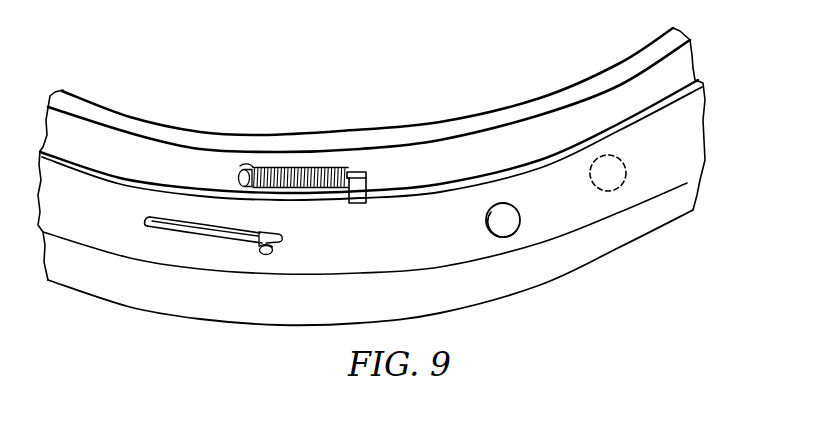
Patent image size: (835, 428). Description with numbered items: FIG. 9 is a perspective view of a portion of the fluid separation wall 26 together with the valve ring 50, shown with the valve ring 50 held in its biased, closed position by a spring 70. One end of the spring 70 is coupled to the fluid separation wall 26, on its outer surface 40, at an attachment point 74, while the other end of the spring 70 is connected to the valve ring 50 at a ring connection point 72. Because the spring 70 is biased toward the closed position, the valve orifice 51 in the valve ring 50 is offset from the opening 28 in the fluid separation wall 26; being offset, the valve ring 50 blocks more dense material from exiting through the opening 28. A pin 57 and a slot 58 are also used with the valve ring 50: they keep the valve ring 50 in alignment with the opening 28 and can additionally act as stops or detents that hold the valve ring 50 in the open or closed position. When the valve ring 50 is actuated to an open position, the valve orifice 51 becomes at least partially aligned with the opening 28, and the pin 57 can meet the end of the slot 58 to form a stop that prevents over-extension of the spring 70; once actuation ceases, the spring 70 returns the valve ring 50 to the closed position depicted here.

The fluid separation wall 26 is at (137, 84).
The outer surface 40 is at (433, 132).
The valve ring 50 is at (442, 240).
The spring 70 is at (297, 168).
The attachment point 74 is at (238, 177).
The ring connection point 72 is at (356, 171).
The slot 58 is at (202, 236).
The pin 57 is at (263, 254).
The valve orifice 51 is at (521, 220).
The opening 28 is at (627, 172).